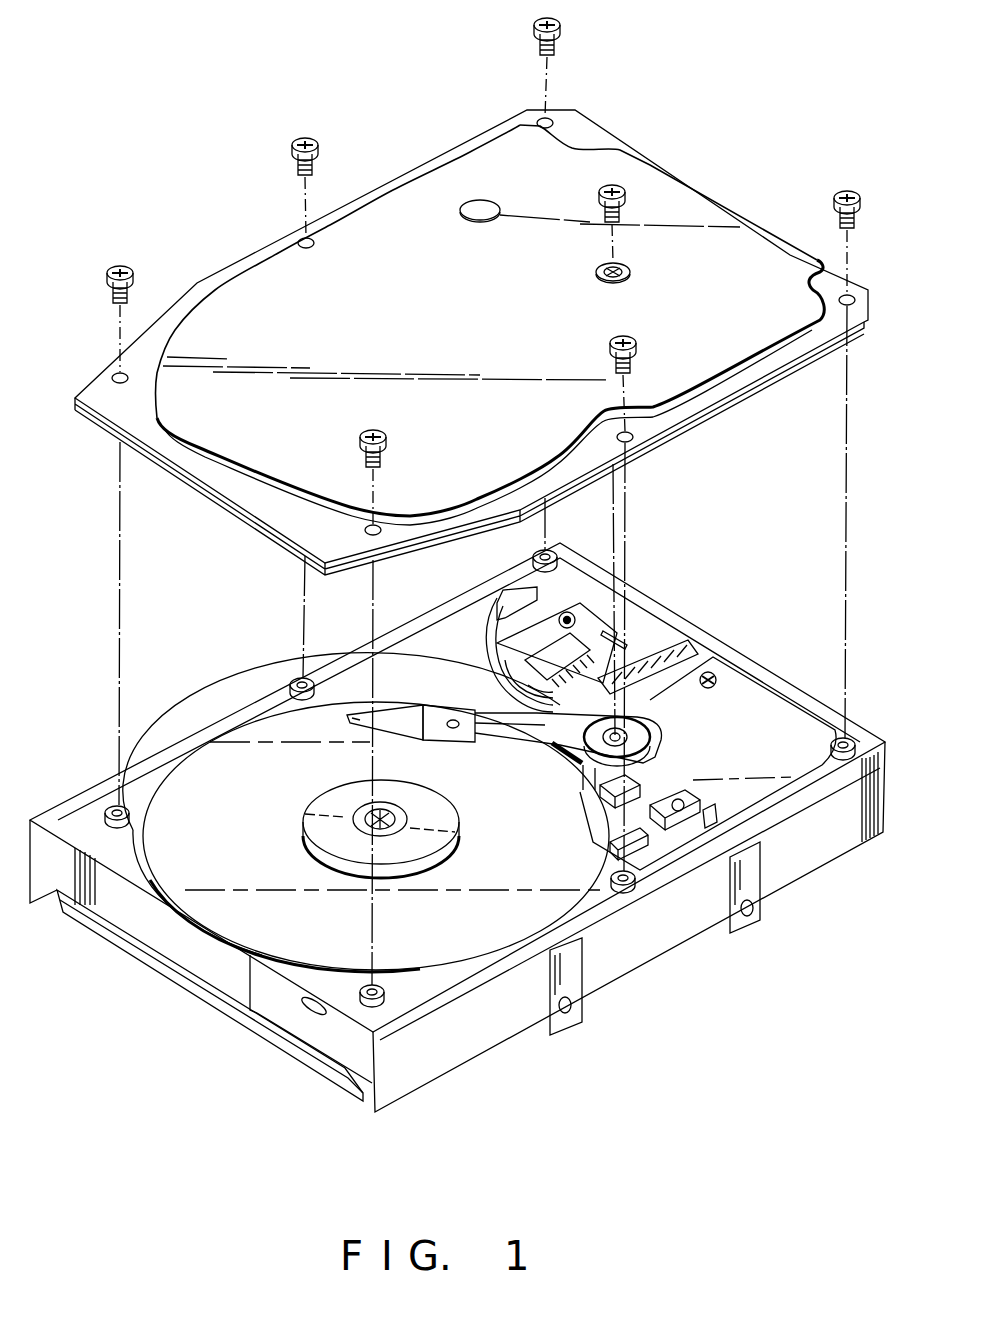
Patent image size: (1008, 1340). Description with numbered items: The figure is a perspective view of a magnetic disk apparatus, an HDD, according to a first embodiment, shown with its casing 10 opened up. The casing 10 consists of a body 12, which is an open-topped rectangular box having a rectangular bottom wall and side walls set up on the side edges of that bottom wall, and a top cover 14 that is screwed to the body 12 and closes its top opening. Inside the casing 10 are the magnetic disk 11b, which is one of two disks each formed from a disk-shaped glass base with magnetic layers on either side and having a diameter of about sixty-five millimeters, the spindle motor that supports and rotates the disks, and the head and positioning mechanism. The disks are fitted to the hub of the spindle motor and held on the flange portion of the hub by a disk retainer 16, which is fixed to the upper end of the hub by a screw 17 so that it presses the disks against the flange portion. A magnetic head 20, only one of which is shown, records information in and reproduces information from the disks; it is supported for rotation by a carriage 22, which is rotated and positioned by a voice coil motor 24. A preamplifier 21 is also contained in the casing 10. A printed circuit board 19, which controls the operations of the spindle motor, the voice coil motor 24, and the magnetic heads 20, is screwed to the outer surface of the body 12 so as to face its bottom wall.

The casing 10 is at (855, 597).
The magnetic disk 11b is at (198, 770).
The body 12 is at (598, 973).
The top cover 14 is at (690, 208).
The disk retainer 16 is at (327, 838).
The screw 17 is at (393, 813).
The printed circuit board 19 is at (262, 1046).
The magnetic head 20 is at (402, 715).
The preamplifier 21 is at (600, 610).
The carriage 22 is at (487, 715).
The voice coil motor 24 is at (750, 756).